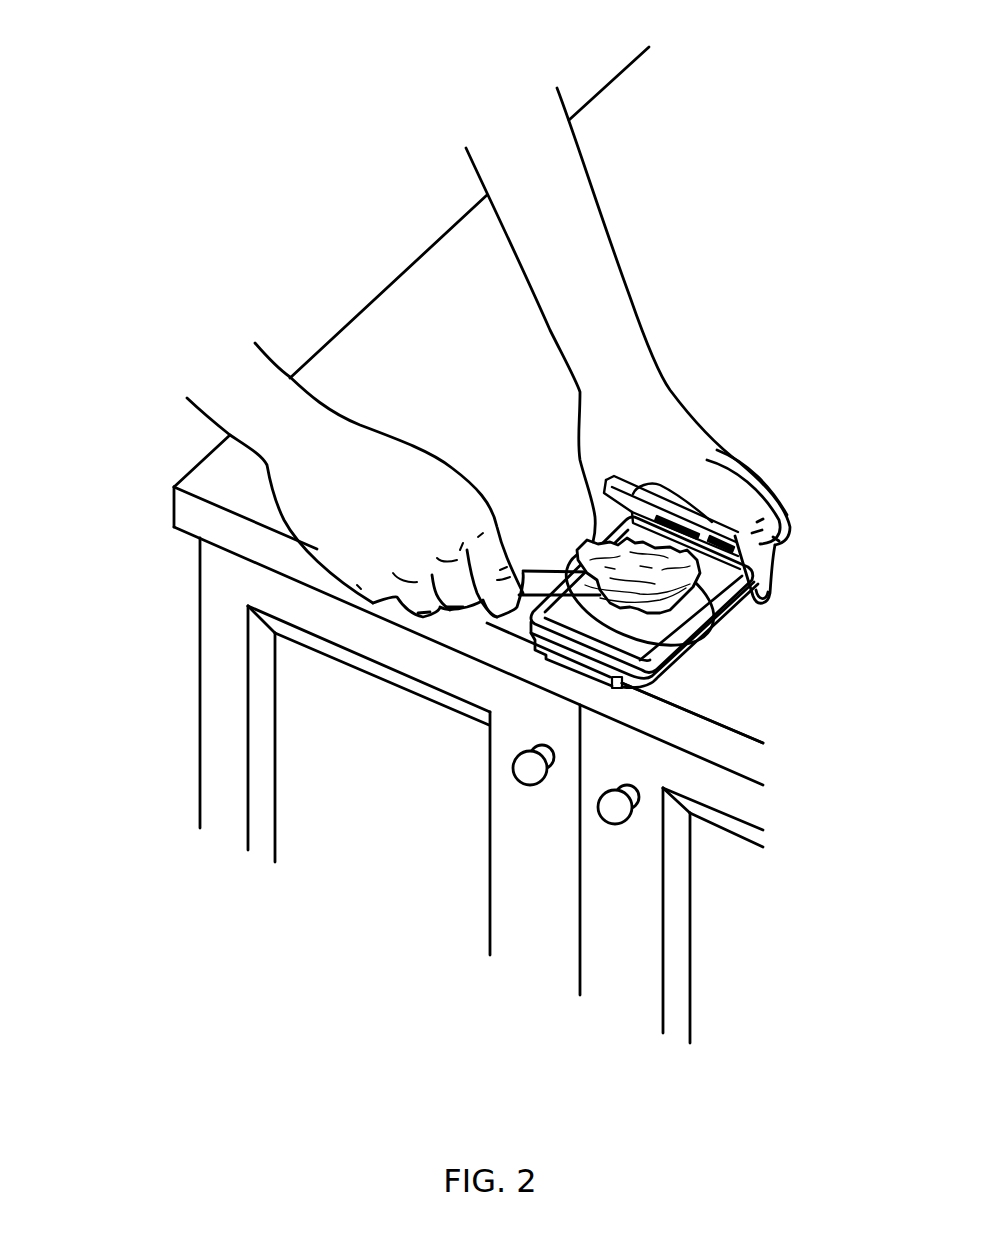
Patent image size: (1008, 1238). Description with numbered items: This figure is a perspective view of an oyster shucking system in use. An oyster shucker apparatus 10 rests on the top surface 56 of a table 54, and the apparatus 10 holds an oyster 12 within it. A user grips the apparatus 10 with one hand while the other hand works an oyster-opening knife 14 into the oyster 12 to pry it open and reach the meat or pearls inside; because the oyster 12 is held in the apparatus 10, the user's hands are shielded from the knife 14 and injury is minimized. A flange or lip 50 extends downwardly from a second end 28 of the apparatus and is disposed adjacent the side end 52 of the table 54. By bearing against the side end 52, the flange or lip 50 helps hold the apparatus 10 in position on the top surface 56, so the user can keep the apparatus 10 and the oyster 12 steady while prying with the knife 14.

The oyster shucker apparatus 10 is at (667, 655).
The oyster 12 is at (707, 588).
The oyster-opening knife 14 is at (549, 578).
The second end 28 is at (620, 681).
The flange or lip 50 is at (573, 657).
The side end 52 is at (197, 517).
The table 54 is at (710, 694).
The top surface 56 is at (212, 481).